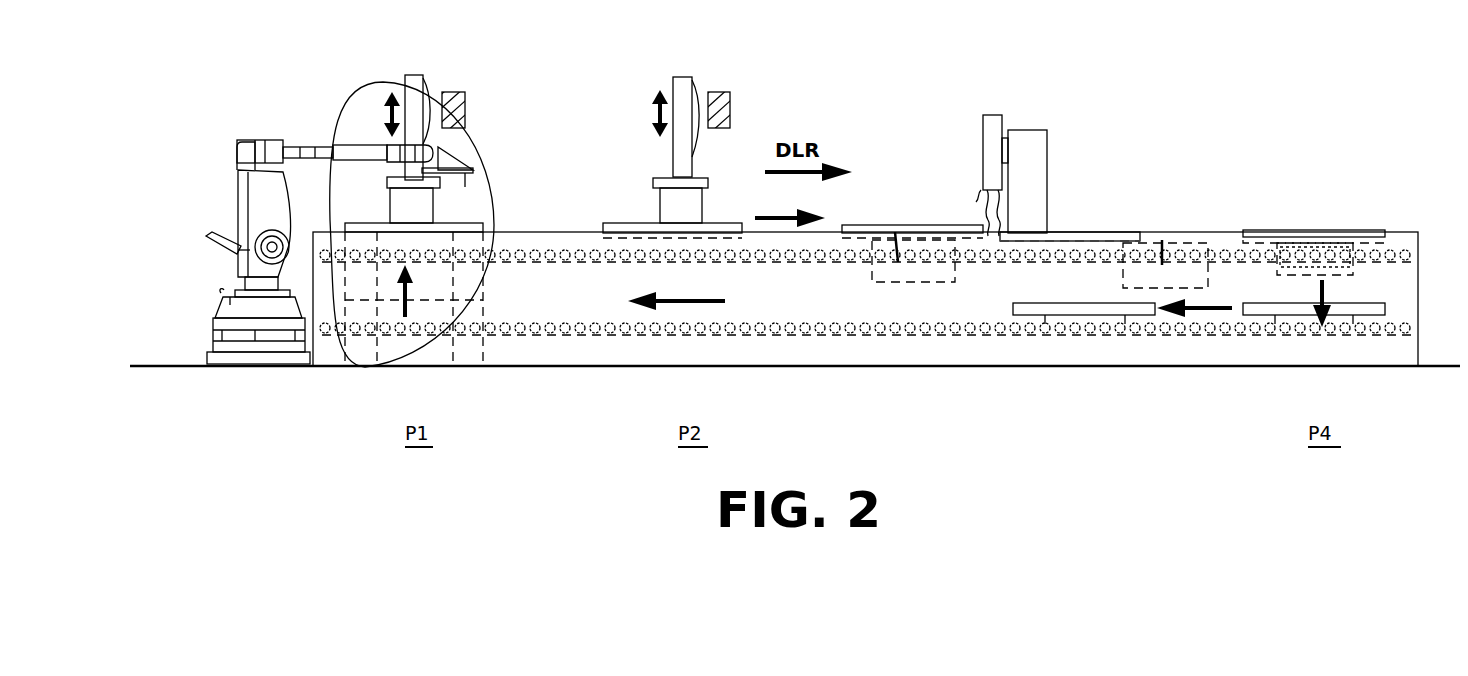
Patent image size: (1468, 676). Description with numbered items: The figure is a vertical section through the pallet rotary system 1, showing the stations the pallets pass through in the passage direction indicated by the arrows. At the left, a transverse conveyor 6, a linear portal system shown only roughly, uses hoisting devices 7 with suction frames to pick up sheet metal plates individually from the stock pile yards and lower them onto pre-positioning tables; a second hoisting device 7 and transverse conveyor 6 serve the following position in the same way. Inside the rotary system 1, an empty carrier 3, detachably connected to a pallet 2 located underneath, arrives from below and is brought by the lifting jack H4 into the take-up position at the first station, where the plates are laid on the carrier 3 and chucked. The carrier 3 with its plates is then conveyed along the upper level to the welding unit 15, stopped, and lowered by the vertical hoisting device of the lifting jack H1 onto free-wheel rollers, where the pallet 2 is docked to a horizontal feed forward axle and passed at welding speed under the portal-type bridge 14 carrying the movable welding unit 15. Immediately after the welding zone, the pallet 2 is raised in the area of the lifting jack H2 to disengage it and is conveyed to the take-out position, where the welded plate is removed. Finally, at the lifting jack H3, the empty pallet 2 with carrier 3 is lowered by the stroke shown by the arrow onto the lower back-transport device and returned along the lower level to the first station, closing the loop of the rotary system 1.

The pallet rotary system 1 is at (1380, 366).
The pallet 2 is at (1307, 250).
The carrier 3 is at (1282, 232).
The transverse conveyor 6 is at (452, 92).
The hoisting device 7 is at (413, 78).
The portal-type bridge 14 is at (1028, 137).
The welding unit 15 is at (992, 117).
The lifting jack H1 is at (896, 233).
The lifting jack H2 is at (1162, 240).
The lifting jack H3 is at (1343, 231).
The lifting jack H4 is at (385, 242).